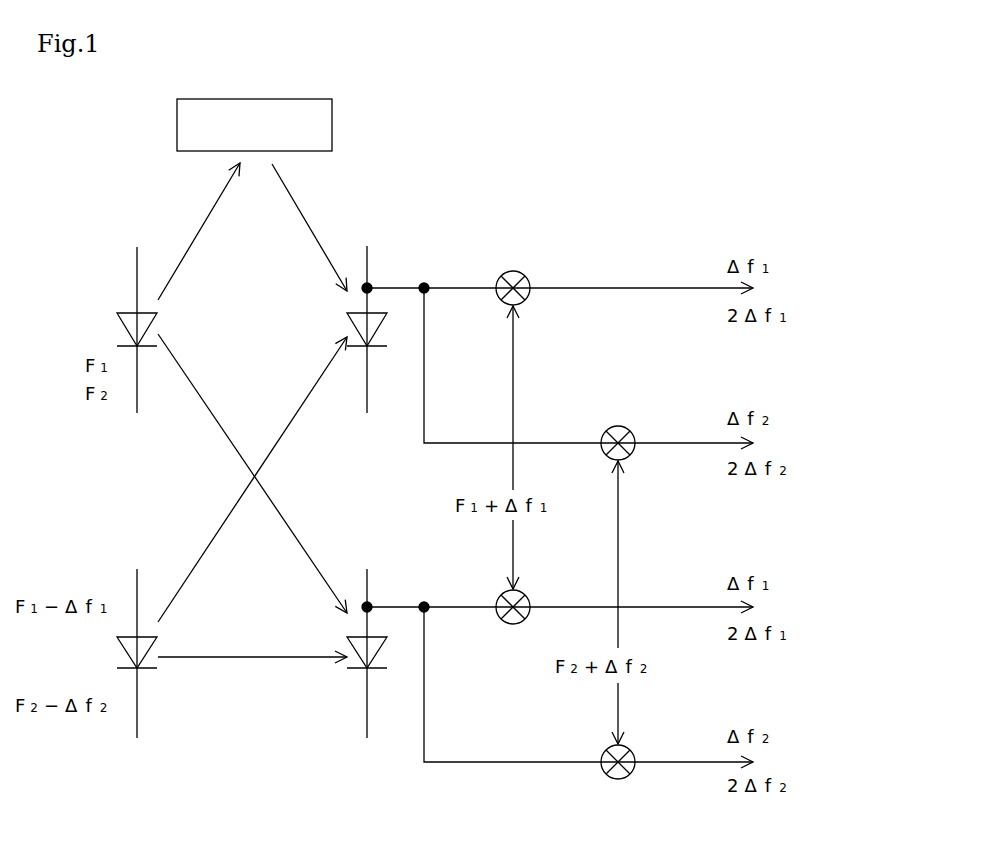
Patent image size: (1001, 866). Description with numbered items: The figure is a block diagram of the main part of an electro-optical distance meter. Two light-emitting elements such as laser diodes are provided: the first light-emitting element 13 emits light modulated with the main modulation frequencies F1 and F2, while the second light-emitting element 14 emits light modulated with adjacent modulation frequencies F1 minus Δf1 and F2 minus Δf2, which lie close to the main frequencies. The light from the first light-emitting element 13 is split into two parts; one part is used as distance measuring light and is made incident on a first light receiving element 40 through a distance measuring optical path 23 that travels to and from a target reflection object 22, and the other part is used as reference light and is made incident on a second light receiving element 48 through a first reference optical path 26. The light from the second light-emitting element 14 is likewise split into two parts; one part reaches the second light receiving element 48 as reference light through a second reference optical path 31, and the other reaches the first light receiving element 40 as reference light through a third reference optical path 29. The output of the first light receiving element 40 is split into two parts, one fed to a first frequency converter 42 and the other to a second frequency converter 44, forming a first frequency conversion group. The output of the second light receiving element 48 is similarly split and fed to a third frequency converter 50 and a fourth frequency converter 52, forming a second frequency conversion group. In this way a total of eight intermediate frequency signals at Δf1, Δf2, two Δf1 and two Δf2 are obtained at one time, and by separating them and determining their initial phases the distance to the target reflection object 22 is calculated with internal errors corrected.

The first light-emitting element 13 is at (118, 313).
The second light-emitting element 14 is at (139, 670).
The target reflection object 22 is at (333, 128).
The distance measuring optical path 23 is at (305, 227).
The first reference optical path 26 is at (232, 375).
The third reference optical path 29 is at (228, 512).
The second reference optical path 31 is at (258, 660).
The first light receiving element 40 is at (358, 350).
The first frequency converter 42 is at (513, 271).
The second frequency converter 44 is at (618, 427).
The second light receiving element 48 is at (362, 677).
The third frequency converter 50 is at (500, 594).
The fourth frequency converter 52 is at (618, 780).